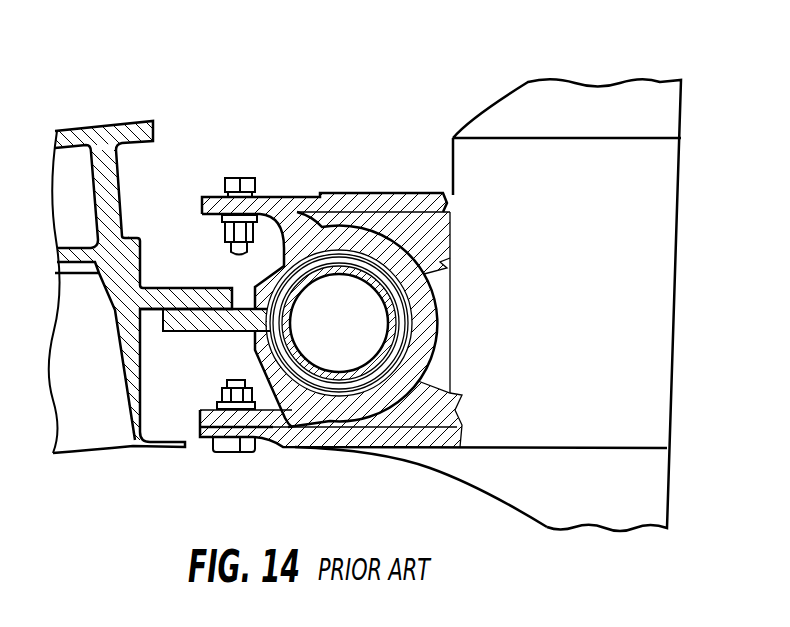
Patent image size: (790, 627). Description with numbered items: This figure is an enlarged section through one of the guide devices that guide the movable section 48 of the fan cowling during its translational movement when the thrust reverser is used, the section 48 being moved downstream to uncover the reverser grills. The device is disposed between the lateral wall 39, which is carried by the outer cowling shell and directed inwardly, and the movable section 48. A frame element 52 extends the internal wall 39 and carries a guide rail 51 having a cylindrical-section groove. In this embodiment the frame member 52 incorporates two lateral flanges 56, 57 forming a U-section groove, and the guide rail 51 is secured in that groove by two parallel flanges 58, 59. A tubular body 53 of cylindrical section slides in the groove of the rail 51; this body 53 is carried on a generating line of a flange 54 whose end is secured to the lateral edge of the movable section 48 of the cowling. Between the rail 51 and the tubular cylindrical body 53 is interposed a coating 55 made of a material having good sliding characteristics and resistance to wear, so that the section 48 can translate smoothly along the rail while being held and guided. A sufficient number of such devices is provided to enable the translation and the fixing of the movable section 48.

The lateral wall 39 is at (503, 493).
The movable section of the cowling 48 is at (112, 447).
The guide rail 51 is at (407, 233).
The frame element 52 is at (453, 254).
The tubular cylindrical-section body 53 is at (410, 352).
The flange 54 is at (240, 320).
The coating 55 is at (410, 315).
The lateral flange 56 is at (327, 437).
The lateral flange 57 is at (340, 193).
The parallel flange 58 is at (265, 418).
The parallel flange 59 is at (262, 197).